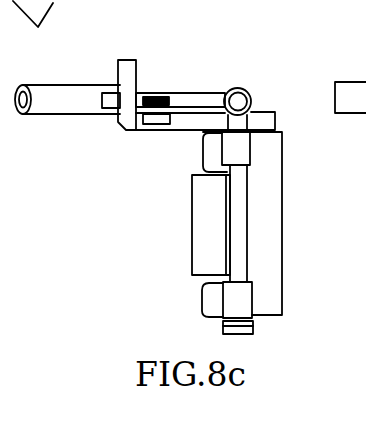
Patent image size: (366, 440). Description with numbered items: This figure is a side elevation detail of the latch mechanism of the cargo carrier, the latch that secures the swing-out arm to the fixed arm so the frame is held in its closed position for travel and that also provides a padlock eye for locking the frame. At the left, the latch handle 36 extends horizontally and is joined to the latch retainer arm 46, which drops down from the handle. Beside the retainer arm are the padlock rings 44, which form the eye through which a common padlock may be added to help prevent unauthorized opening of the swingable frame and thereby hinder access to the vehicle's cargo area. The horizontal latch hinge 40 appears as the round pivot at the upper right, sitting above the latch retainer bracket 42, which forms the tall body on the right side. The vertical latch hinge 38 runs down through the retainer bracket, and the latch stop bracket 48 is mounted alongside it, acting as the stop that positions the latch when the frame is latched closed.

The latch handle 36 is at (67, 103).
The vertical latch hinge 38 is at (242, 243).
The horizontal latch hinge 40 is at (243, 88).
The latch retainer bracket 42 is at (275, 217).
The padlock ring 44 is at (172, 90).
The latch retainer arm 46 is at (132, 70).
The latch stop bracket 48 is at (195, 225).